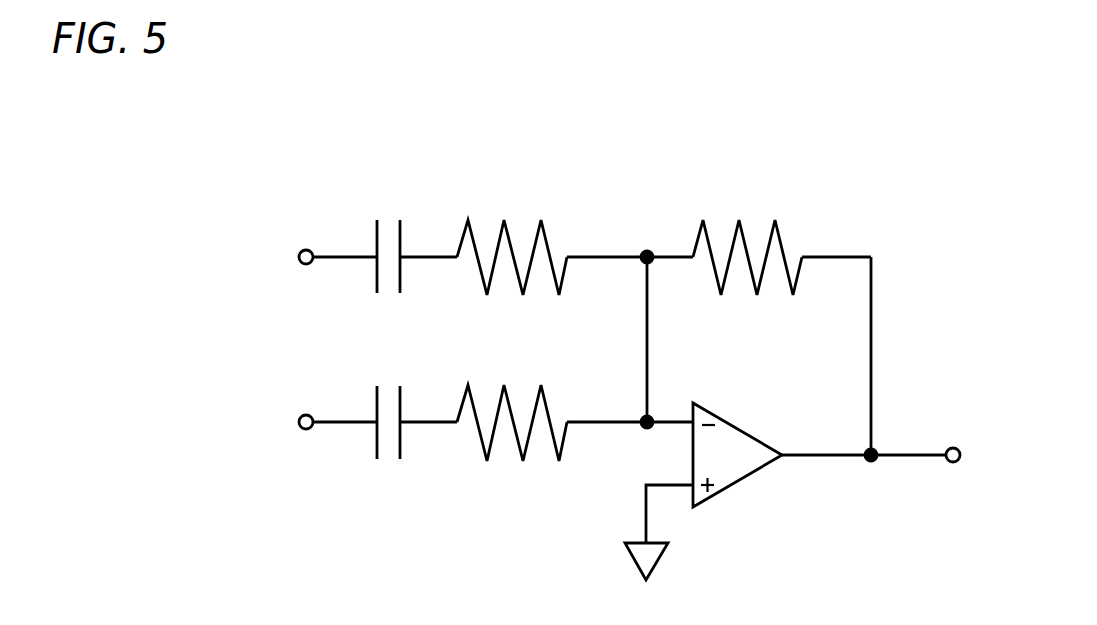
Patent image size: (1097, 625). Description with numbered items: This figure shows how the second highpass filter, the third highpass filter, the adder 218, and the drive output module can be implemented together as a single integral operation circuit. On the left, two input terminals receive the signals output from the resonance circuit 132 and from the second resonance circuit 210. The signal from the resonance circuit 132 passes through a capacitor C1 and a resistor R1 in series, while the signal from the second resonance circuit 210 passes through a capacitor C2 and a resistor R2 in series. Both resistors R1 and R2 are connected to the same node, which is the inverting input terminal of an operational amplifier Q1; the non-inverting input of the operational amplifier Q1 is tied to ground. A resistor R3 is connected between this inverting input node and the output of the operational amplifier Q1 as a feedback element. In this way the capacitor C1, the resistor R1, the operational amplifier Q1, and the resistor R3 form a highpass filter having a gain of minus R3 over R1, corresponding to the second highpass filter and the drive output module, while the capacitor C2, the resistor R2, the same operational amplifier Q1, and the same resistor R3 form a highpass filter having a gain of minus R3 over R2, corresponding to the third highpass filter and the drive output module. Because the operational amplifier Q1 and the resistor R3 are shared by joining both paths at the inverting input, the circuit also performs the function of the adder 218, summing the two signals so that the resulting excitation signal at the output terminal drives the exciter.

The resonance circuit 132 is at (181, 267).
The second resonance circuit 210 is at (181, 428).
The adder 218 is at (1012, 463).
The capacitor C1 is at (391, 233).
The capacitor C2 is at (391, 452).
The resistor R1 is at (512, 234).
The resistor R2 is at (512, 451).
The resistor R3 is at (747, 234).
The operational amplifier Q1 is at (737, 453).